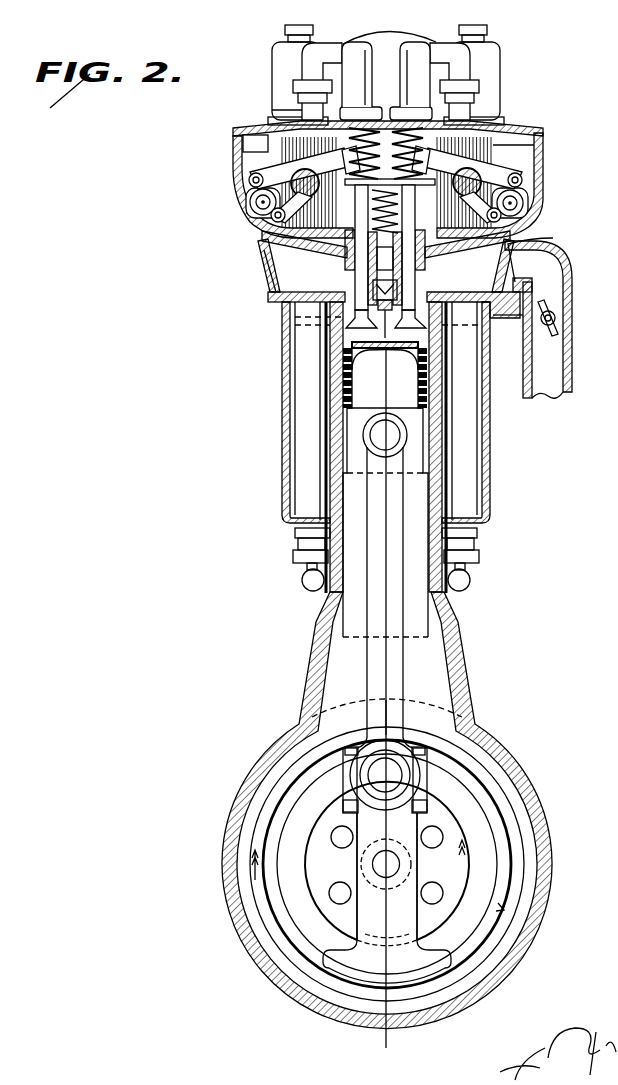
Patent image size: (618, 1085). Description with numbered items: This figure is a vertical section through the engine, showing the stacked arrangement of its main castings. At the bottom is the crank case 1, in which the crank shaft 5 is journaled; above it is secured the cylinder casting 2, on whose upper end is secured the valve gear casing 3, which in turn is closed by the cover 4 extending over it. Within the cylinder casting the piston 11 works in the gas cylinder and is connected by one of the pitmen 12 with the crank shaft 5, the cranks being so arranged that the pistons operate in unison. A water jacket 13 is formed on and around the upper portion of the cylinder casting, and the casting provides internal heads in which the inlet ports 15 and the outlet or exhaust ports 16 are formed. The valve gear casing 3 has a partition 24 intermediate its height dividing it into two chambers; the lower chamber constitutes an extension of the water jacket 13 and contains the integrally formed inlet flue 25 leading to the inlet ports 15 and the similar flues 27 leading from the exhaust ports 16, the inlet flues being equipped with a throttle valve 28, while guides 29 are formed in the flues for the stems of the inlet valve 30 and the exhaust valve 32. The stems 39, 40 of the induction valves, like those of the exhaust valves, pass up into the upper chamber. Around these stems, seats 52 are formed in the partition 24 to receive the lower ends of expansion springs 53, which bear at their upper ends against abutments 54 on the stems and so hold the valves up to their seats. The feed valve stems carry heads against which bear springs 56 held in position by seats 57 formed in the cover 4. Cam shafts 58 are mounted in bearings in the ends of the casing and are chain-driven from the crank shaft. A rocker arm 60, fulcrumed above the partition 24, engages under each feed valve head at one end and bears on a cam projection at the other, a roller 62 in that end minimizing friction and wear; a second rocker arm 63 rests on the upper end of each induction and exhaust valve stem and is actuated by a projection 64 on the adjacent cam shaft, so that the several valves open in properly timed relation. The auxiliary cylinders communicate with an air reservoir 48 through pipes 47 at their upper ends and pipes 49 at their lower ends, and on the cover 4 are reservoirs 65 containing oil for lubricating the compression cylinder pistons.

The crank case 1 is at (500, 950).
The cylinder casting 2 is at (470, 584).
The valve gear casing 3 is at (383, 24).
The cover 4 is at (295, 317).
The crank shaft 5 is at (393, 862).
The piston 11 is at (387, 357).
The pitmen 12 is at (350, 540).
The water jacket 13 is at (478, 462).
The inlet ports 15 is at (430, 322).
The outlet or exhaust ports 16 is at (334, 336).
The partition 24 is at (268, 255).
The flue 25 is at (541, 252).
The flues 27 is at (262, 296).
The throttle valve 28 is at (558, 332).
The guides 29 is at (350, 283).
The inlet valve 30 is at (418, 360).
The outlet or exhaust valve 32 is at (345, 375).
The valve stem 39 is at (568, 266).
The valve stem 40 is at (262, 260).
The pipes 47 is at (272, 95).
The air reservoir 48 is at (402, 44).
The pipes 49 is at (311, 582).
The seats 52 is at (330, 252).
The expansion springs 53 is at (255, 250).
The abutments 54 is at (370, 120).
The springs 56 is at (357, 110).
The seats 57 is at (371, 108).
The cam shafts 58 is at (248, 182).
The rocker arm 60 is at (252, 229).
The roller 62 is at (256, 232).
The rocker arm 63 is at (272, 150).
The projection 64 is at (250, 206).
The reservoirs 65 is at (275, 74).